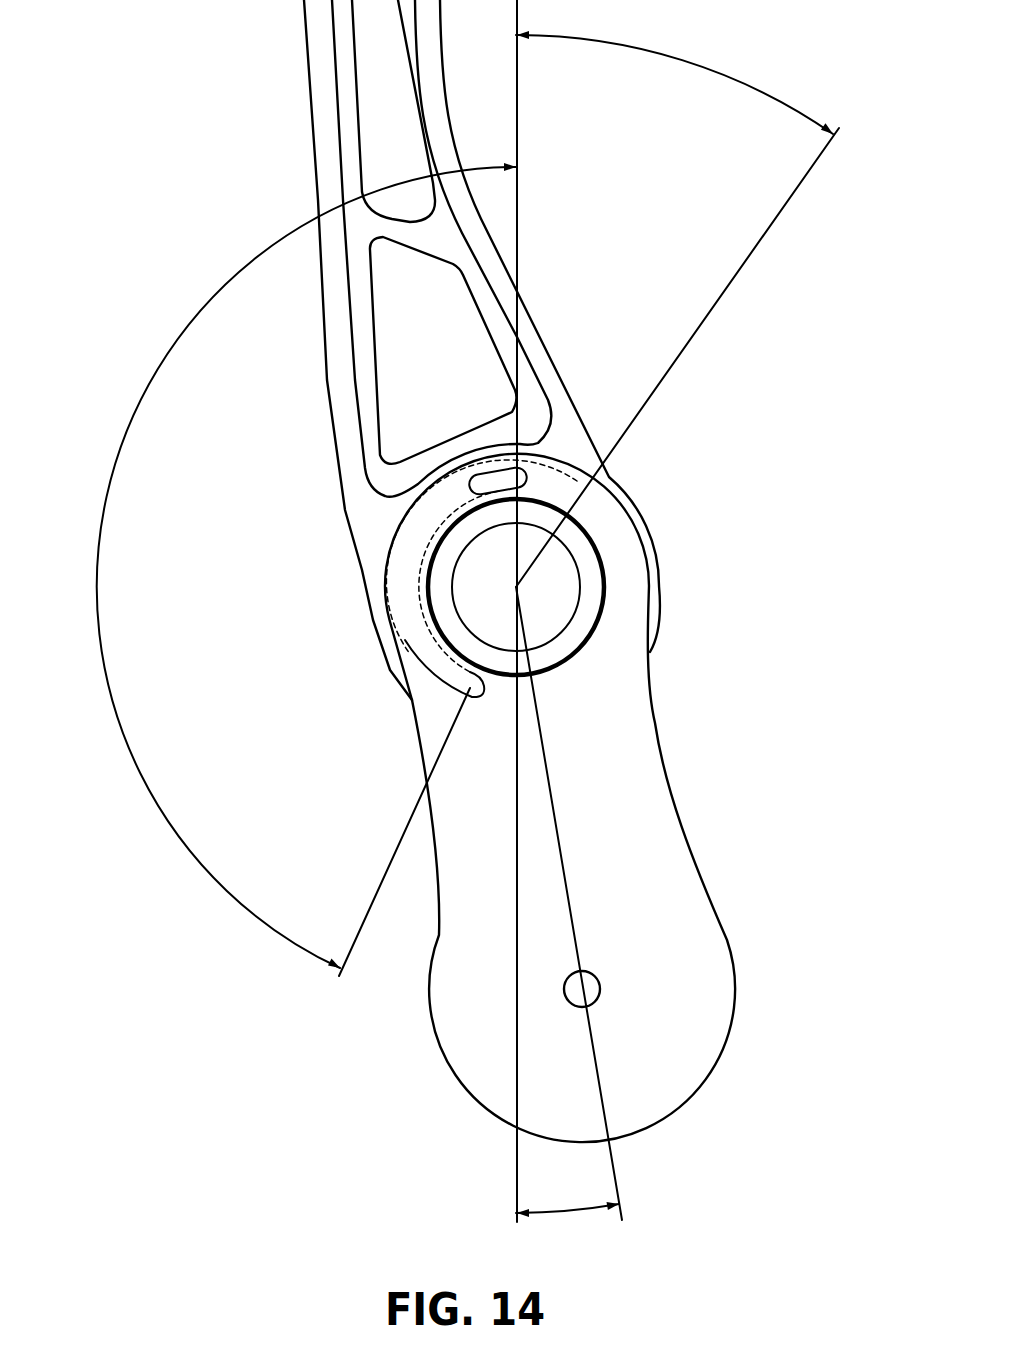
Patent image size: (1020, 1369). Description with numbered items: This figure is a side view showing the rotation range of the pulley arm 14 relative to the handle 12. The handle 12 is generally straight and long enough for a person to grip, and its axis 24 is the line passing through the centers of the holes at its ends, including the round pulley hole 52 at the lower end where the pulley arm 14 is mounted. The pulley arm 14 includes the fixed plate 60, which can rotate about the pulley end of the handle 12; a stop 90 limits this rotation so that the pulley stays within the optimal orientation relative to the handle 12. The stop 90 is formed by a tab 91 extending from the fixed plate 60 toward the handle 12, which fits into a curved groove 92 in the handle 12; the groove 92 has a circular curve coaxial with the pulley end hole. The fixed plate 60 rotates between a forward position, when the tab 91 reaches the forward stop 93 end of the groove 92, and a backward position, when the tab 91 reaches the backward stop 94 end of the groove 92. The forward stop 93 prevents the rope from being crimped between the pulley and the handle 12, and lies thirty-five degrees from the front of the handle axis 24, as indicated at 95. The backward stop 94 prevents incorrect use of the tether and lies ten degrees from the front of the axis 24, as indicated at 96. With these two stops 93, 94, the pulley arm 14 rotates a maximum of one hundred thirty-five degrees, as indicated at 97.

The handle 12 is at (298, 100).
The pulley arm 14 is at (564, 571).
The axis 24 is at (517, 97).
The pulley hole 52 is at (463, 597).
The fixed plate 60 is at (673, 798).
The stop 90 is at (451, 579).
The tab 91 is at (495, 478).
The curved groove 92 is at (402, 628).
The forward stop 93 is at (482, 695).
The backward stop 94 is at (528, 478).
The forward stop angle 95 is at (710, 70).
The backward stop angle 96 is at (568, 1207).
The maximum rotation angle 97 is at (102, 500).